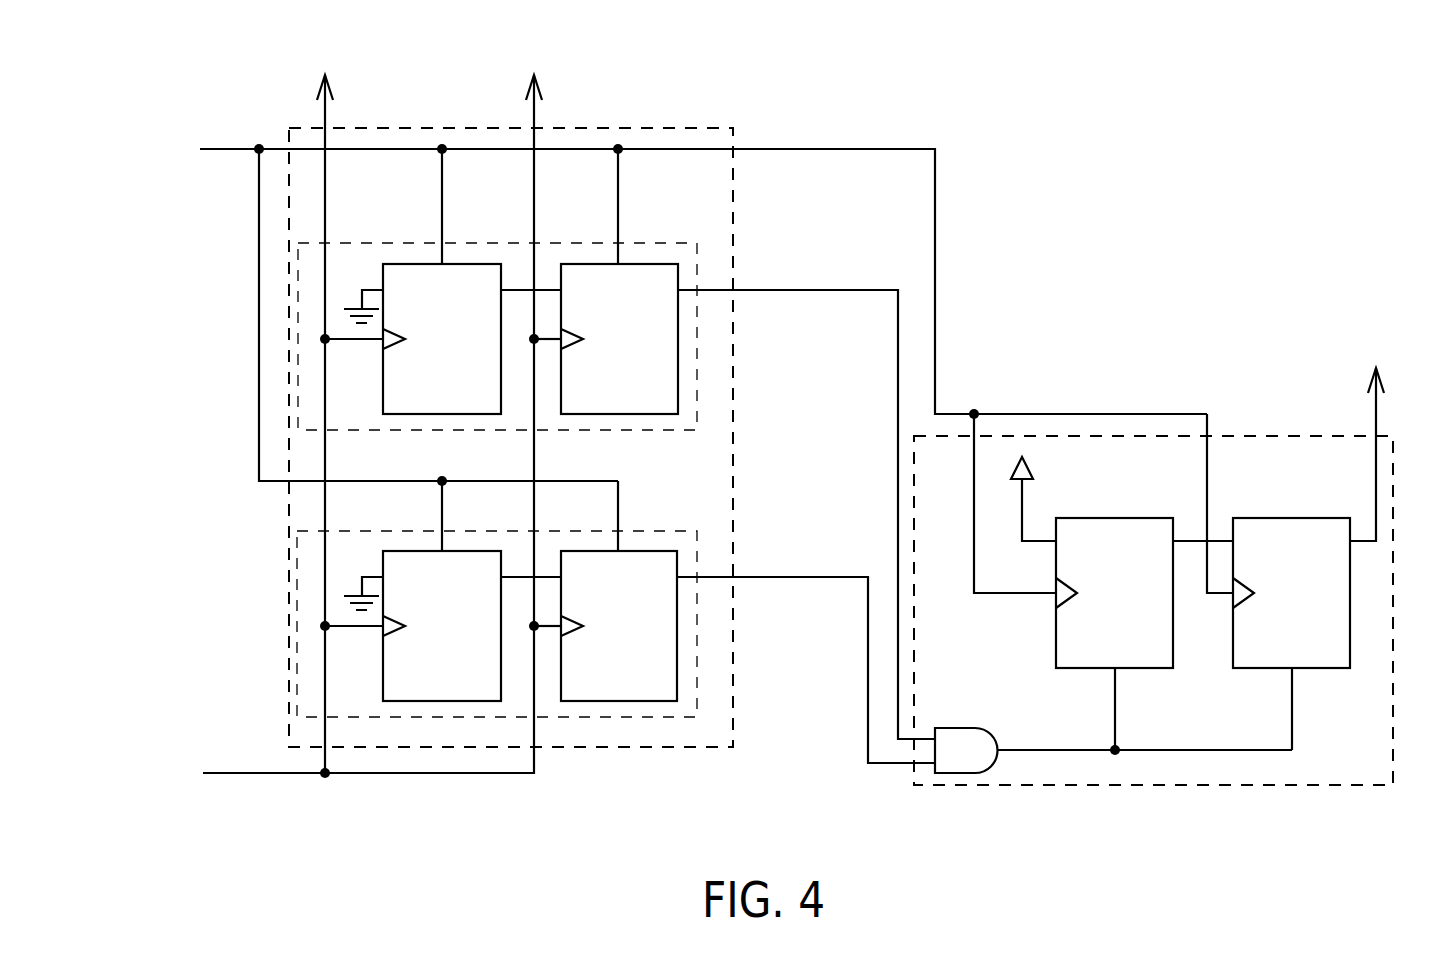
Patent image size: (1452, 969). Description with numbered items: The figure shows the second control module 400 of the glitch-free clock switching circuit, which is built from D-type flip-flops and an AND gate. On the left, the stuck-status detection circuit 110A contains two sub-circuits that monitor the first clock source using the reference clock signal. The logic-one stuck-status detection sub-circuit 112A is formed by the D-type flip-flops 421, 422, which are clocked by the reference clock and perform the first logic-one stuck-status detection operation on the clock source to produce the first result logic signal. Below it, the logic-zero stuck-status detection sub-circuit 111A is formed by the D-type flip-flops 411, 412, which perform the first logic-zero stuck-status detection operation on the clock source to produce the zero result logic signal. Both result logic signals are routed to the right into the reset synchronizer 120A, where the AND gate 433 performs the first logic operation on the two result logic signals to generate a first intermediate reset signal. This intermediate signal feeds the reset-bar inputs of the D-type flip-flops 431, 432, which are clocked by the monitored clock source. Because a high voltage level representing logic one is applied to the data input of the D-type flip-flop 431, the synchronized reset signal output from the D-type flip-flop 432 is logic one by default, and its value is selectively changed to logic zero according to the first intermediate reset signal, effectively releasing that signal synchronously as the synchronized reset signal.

The second control module 400 is at (180, 83).
The stuck-status detection circuit 110A is at (698, 125).
The logic 1 stuck-status detection sub-circuit 112A is at (647, 243).
The logic 0 stuck-status detection sub-circuit 111A is at (643, 531).
The D-type flip-flop 421 is at (473, 262).
The D-type flip-flop 422 is at (586, 262).
The D-type flip-flop 411 is at (473, 549).
The D-type flip-flop 412 is at (586, 549).
The reset synchronizer 120A is at (1285, 785).
The D-type flip-flop 431 is at (1117, 516).
The D-type flip-flop 432 is at (1296, 516).
The AND gate 433 is at (950, 776).